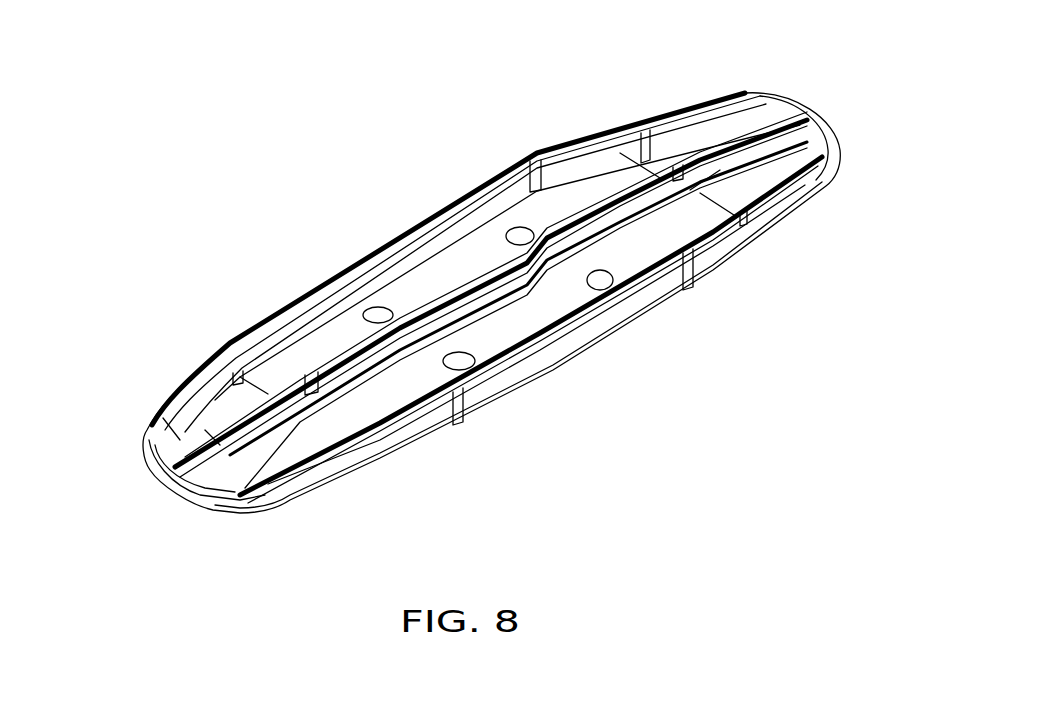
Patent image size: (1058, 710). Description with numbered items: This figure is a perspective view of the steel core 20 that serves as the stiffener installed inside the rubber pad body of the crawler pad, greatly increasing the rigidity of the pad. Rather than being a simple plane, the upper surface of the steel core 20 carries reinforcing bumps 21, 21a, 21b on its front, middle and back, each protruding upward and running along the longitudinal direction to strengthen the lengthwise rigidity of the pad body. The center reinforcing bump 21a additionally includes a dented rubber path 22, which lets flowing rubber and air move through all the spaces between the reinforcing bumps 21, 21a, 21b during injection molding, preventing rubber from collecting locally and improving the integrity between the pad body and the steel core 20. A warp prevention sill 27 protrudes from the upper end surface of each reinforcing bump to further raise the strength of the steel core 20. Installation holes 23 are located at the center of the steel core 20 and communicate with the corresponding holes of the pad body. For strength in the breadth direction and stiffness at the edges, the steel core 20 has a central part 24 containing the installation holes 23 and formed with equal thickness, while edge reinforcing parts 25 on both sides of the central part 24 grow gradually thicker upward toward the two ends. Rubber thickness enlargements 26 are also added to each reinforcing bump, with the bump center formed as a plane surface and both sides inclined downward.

The steel core 20 is at (368, 188).
The reinforcing bump 21 is at (580, 325).
The reinforcing bump 21a is at (652, 205).
The reinforcing bump 21b is at (265, 322).
The rubber path 22 is at (483, 280).
The installation hole 23 is at (376, 307).
The central part 24 is at (490, 335).
The edge reinforcing part 25 is at (193, 437).
The rubber thickness enlargement 26 is at (653, 127).
The warp prevention sill 27 is at (567, 133).